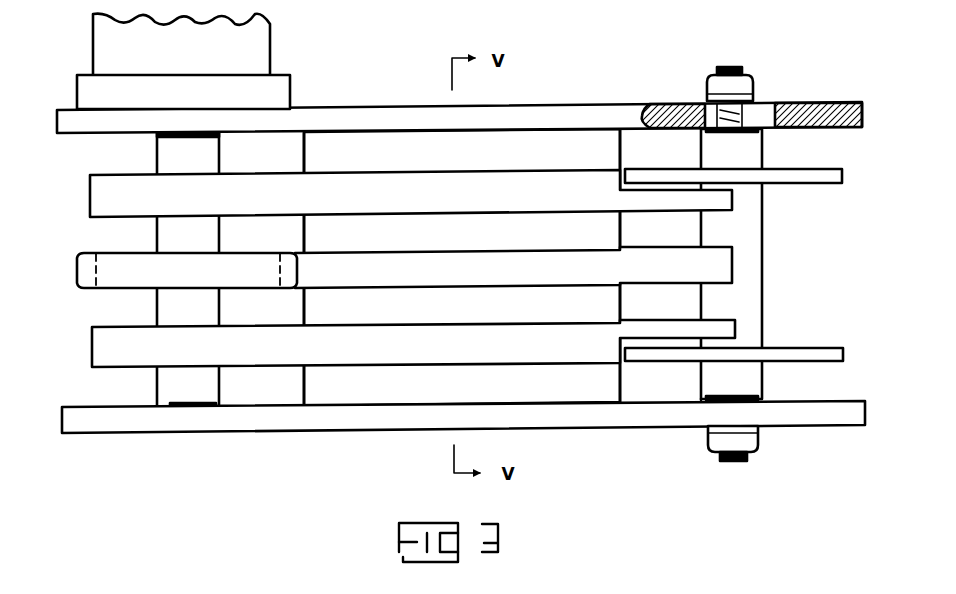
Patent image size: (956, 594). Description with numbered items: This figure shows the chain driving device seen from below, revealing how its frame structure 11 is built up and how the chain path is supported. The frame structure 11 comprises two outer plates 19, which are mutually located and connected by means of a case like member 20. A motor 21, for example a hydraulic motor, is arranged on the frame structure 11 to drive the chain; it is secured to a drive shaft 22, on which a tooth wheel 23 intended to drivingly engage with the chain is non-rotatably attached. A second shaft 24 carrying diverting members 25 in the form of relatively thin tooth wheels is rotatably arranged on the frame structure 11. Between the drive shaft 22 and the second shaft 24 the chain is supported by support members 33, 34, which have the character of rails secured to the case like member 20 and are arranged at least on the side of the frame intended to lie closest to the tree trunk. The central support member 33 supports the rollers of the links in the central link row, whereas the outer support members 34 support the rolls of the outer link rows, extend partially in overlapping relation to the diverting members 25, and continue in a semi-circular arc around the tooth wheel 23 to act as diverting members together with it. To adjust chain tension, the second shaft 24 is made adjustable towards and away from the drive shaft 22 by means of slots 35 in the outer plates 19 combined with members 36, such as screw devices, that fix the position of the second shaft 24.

The frame structure 11 is at (629, 98).
The outer plates 19 is at (555, 115).
The case like member 20 is at (388, 150).
The motor 21 is at (257, 43).
The drive shaft 22 is at (167, 154).
The tooth wheel 23 is at (138, 272).
The second shaft 24 is at (747, 153).
The diverting members 25 is at (800, 184).
The central support member 33 is at (500, 275).
The outer support members 34 is at (480, 198).
The slots 35 is at (763, 115).
The members 36 is at (732, 85).